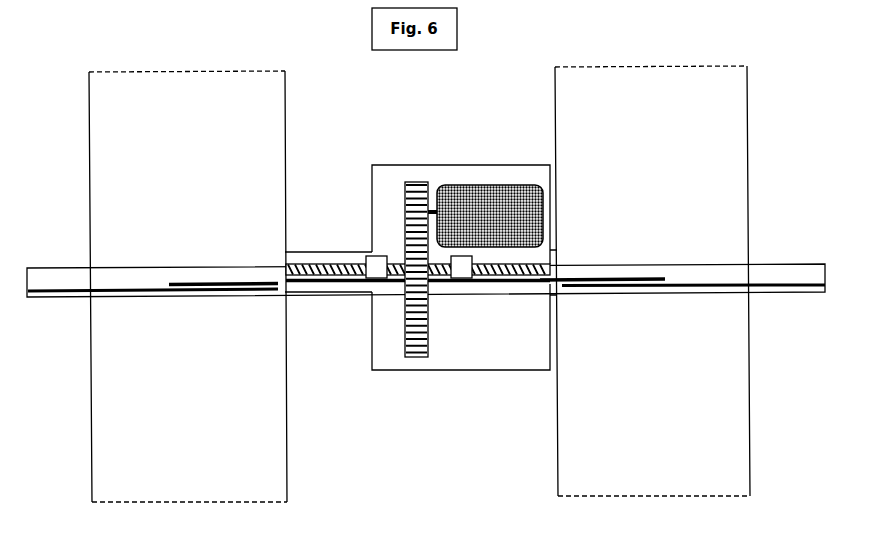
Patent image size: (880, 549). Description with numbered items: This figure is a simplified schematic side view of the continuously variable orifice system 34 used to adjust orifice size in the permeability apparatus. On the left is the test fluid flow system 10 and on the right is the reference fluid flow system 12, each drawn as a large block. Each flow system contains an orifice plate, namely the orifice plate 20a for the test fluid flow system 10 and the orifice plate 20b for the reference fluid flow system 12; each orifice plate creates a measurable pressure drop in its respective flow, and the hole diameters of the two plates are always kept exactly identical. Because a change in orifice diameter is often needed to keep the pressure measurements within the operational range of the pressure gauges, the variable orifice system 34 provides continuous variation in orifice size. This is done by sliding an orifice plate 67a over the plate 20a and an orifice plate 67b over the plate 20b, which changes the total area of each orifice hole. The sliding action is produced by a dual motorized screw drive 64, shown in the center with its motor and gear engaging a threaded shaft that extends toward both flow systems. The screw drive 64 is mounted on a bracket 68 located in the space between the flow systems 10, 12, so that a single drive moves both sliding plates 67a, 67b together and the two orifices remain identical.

The test fluid flow system 10 is at (273, 422).
The reference fluid flow system 12 is at (582, 413).
The orifice plate 20a is at (143, 292).
The orifice plate 20b is at (426, 148).
The continuously variable orifice system 34 is at (418, 215).
The dual motorized screw drive 64 is at (482, 190).
The sliding orifice plate 67a is at (215, 283).
The sliding orifice plate 67b is at (607, 277).
The bracket 68 is at (380, 167).